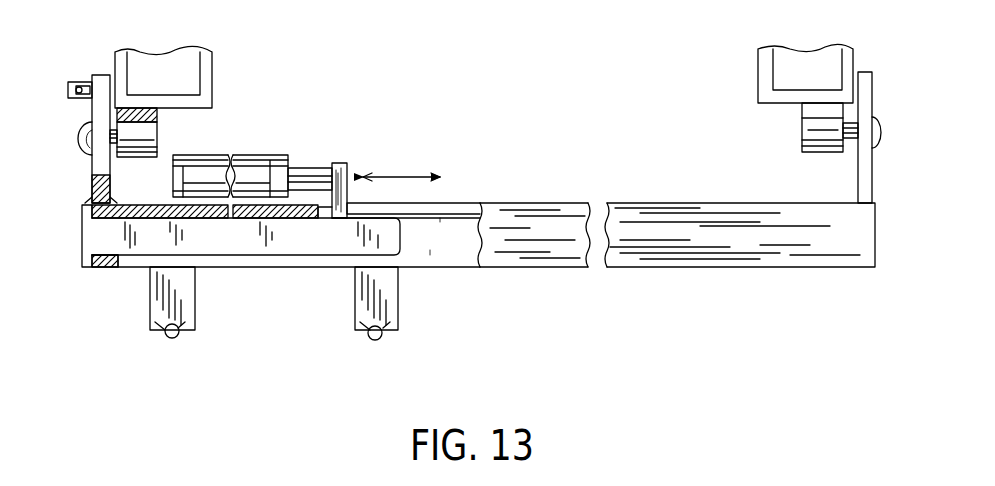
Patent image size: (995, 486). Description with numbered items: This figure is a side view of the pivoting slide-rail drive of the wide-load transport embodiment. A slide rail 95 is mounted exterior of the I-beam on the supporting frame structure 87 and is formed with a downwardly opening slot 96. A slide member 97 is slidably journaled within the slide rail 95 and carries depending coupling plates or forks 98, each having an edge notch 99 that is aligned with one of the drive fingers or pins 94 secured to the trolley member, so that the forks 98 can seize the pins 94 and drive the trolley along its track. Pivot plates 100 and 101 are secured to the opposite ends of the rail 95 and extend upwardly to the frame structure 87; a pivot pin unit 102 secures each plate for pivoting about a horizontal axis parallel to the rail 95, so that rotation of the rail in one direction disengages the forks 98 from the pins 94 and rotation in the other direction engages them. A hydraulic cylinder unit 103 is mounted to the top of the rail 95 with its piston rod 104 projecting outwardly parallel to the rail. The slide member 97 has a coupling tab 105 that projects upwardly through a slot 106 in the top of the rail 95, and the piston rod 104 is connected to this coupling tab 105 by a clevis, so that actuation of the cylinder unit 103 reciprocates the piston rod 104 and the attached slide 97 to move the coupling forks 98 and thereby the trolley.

The supporting frame structure 87 is at (212, 64).
The drive fingers or pins 94 is at (174, 338).
The slide rail 95 is at (632, 195).
The downwardly opening slot 96 is at (455, 268).
The slide member 97 is at (302, 248).
The coupling plates or forks 98 is at (180, 320).
The edge notches 99 is at (153, 296).
The pivot plate 100 is at (100, 97).
The pivot plate 101 is at (868, 78).
The pivot pin unit 102 is at (85, 157).
The cylinder unit 103 is at (262, 157).
The piston rod 104 is at (318, 166).
The coupling tab 105 is at (352, 165).
The slot 106 is at (463, 212).